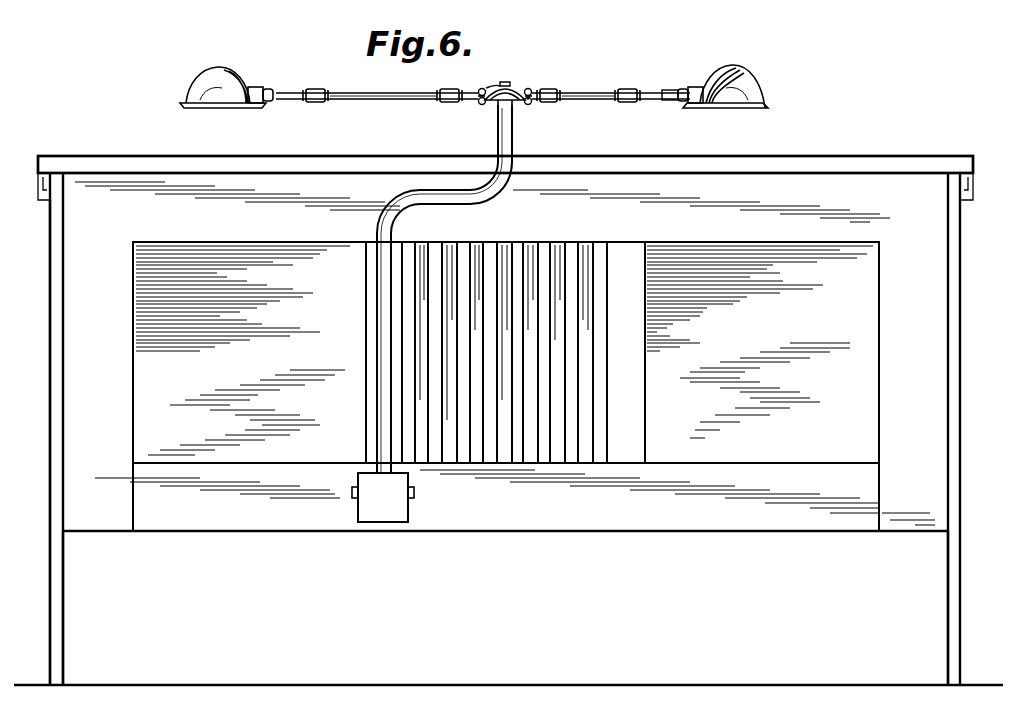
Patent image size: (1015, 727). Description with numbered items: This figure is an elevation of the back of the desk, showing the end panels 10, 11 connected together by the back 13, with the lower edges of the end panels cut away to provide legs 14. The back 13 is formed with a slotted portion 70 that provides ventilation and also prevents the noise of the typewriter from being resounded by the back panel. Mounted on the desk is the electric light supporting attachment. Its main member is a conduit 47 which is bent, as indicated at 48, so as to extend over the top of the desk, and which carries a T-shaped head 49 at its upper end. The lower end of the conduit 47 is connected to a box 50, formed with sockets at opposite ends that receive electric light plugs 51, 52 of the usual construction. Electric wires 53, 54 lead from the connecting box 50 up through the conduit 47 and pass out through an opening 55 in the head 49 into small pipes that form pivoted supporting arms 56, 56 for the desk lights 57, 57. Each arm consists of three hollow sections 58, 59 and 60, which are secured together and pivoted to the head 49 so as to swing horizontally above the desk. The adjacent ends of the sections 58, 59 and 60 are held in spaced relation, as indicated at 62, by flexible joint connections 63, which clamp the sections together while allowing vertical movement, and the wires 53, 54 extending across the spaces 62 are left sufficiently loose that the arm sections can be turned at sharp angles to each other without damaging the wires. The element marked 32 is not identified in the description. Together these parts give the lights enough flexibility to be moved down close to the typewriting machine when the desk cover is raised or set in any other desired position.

The end panel 10 is at (962, 375).
The end panel 11 is at (58, 396).
The back 13 is at (505, 356).
The legs 14 is at (56, 650).
The top board 32 is at (332, 157).
The conduit 47 is at (380, 403).
The bend of conduit 48 is at (498, 108).
The T-shaped head 49 is at (514, 104).
The box 50 is at (362, 481).
The electric light plug 51 is at (352, 494).
The electric light plug 52 is at (414, 494).
The electric wire 53 is at (540, 83).
The electric wire 54 is at (491, 90).
The opening 55 is at (506, 86).
The pivoted supporting arm 56 is at (372, 87).
The desk light 57 is at (478, 75).
The hollow section 58 is at (480, 102).
The hollow section 59 is at (408, 99).
The hollow section 60 is at (282, 92).
The space 62 is at (314, 103).
The flexible joint connection 63 is at (666, 102).
The slotted portion 70 is at (597, 414).